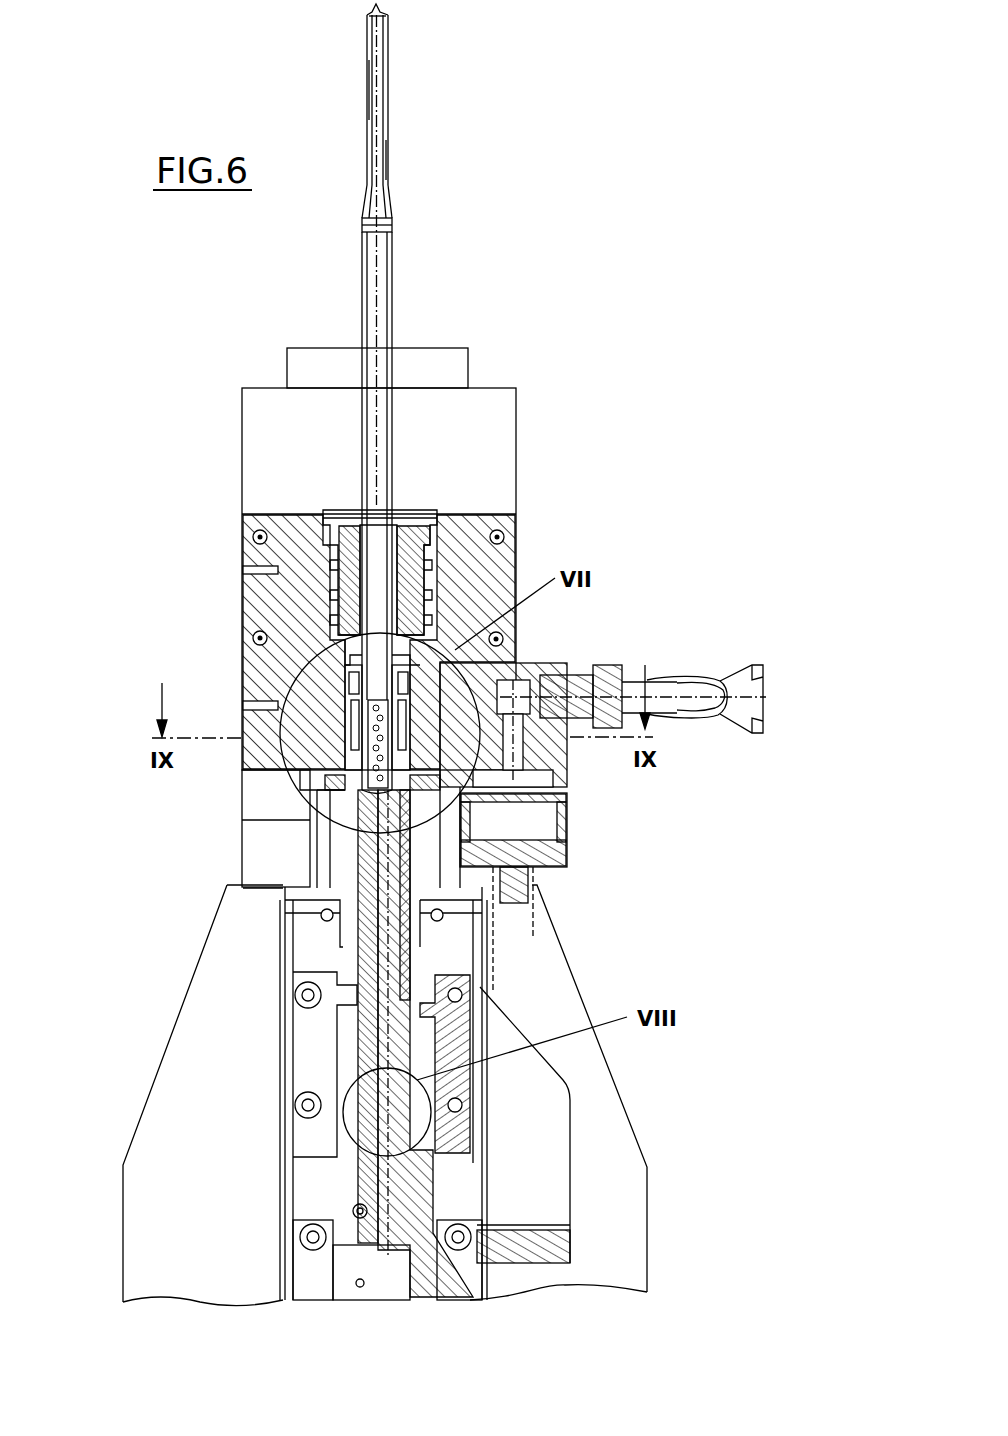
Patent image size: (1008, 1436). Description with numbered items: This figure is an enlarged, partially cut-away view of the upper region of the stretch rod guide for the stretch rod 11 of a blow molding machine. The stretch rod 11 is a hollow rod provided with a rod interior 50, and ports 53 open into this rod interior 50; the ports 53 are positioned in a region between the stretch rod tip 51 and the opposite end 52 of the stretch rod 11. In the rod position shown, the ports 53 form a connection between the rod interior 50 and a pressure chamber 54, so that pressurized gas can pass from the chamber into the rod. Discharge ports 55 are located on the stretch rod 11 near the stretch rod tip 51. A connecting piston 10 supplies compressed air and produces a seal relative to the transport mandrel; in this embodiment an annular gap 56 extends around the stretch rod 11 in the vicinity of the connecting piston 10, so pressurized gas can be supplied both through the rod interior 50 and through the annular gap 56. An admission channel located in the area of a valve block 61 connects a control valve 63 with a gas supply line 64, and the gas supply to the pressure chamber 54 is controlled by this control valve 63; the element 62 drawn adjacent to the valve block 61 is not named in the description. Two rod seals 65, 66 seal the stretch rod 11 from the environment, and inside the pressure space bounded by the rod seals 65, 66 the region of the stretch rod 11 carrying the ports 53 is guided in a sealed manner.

The connecting piston 10 is at (440, 530).
The stretch rod 11 is at (392, 297).
The rod interior 50 is at (382, 442).
The stretch rod tip 51 is at (386, 15).
The opposite end 52 is at (393, 1247).
The ports 53 is at (244, 767).
The pressure chamber 54 is at (355, 690).
The discharge ports 55 is at (377, 75).
The annular gap 56 is at (397, 503).
The valve block 61 is at (517, 747).
The bearing block 62 is at (560, 740).
The control valve 63 is at (567, 810).
The gas supply line 64 is at (663, 678).
The rod seal 65 is at (358, 636).
The rod seal 66 is at (362, 1093).